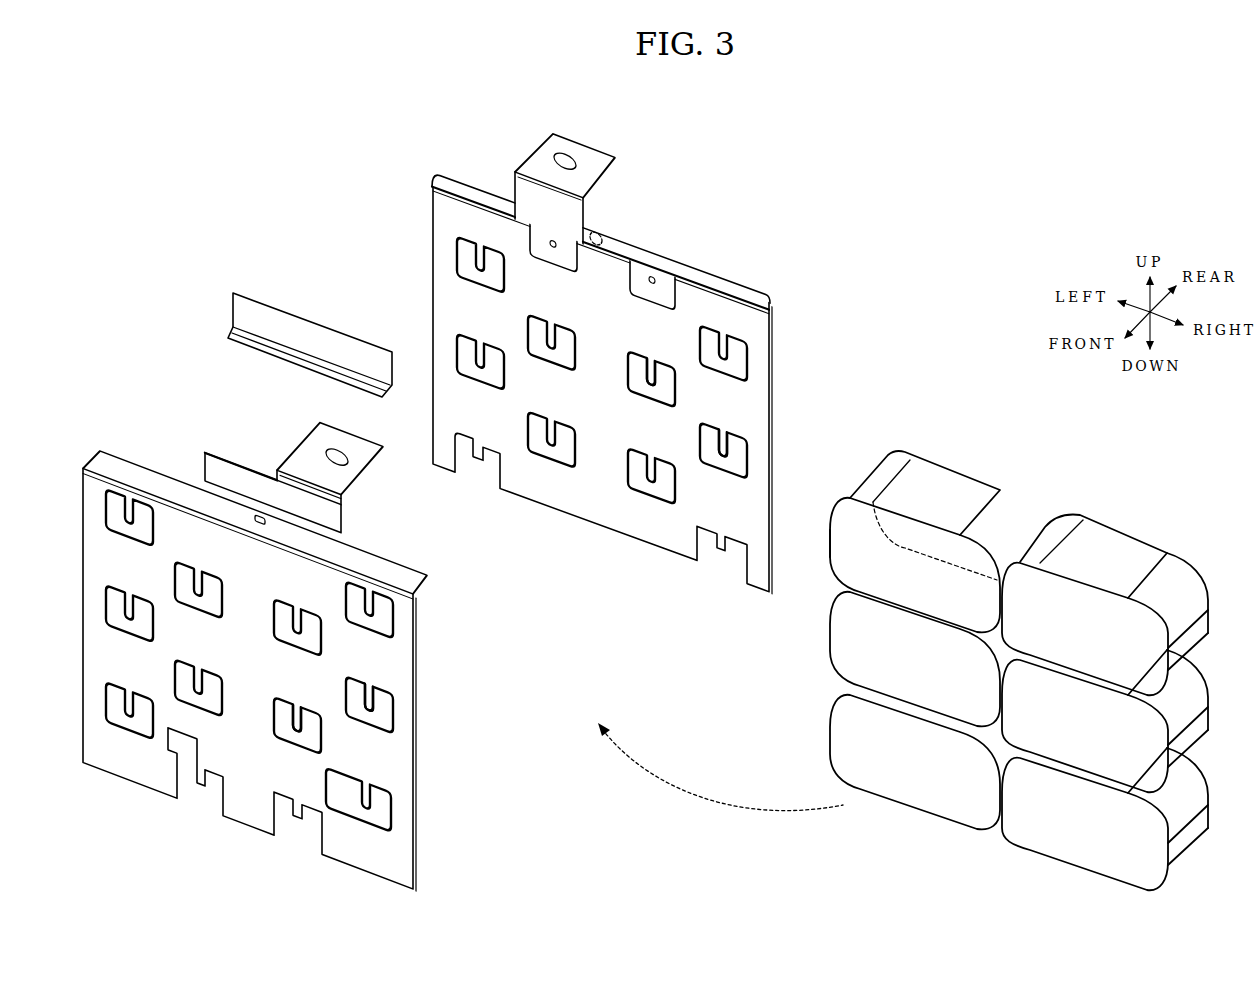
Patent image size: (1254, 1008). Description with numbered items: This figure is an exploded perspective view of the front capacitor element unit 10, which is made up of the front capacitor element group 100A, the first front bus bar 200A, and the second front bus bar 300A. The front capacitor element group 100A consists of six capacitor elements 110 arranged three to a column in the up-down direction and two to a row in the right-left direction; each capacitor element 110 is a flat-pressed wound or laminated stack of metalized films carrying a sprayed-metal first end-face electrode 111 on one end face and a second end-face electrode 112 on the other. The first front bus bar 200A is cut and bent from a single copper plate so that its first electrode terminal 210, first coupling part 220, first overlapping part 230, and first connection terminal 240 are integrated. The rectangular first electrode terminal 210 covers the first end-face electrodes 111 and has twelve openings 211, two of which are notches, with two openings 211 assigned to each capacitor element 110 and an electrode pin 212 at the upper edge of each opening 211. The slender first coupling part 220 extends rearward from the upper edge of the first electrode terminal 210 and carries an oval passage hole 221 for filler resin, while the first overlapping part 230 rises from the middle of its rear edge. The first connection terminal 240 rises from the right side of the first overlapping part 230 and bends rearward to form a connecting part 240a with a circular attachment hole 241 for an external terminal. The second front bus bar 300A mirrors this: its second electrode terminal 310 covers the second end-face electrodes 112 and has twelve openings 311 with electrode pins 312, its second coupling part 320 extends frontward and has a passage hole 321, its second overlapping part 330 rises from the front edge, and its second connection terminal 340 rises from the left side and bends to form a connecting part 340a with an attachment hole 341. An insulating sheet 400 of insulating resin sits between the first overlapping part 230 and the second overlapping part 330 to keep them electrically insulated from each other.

The front capacitor element unit 10 is at (193, 225).
The front capacitor element group 100A is at (1017, 661).
The capacitor element 110 is at (1017, 661).
The first end-face electrode 111 is at (838, 560).
The second end-face electrode 112 is at (935, 485).
The first front bus bar 200A is at (296, 643).
The first electrode terminal 210 is at (253, 813).
The opening 211 is at (293, 747).
The electrode pin 212 is at (280, 712).
The first coupling part 220 is at (130, 473).
The passage hole 221 is at (265, 528).
The first overlapping part 230 is at (247, 487).
The first connection terminal 240 is at (327, 468).
The connecting part 240a is at (307, 460).
The attachment hole 241 is at (340, 448).
The second front bus bar 300A is at (647, 352).
The second electrode terminal 310 is at (590, 512).
The opening 311 is at (643, 398).
The electrode pin 312 is at (630, 368).
The second coupling part 320 is at (707, 277).
The passage hole 321 is at (593, 242).
The second overlapping part 330 is at (552, 223).
The second connection terminal 340 is at (577, 177).
The connecting part 340a is at (538, 162).
The attachment hole 341 is at (568, 155).
The insulating sheet 400 is at (313, 322).